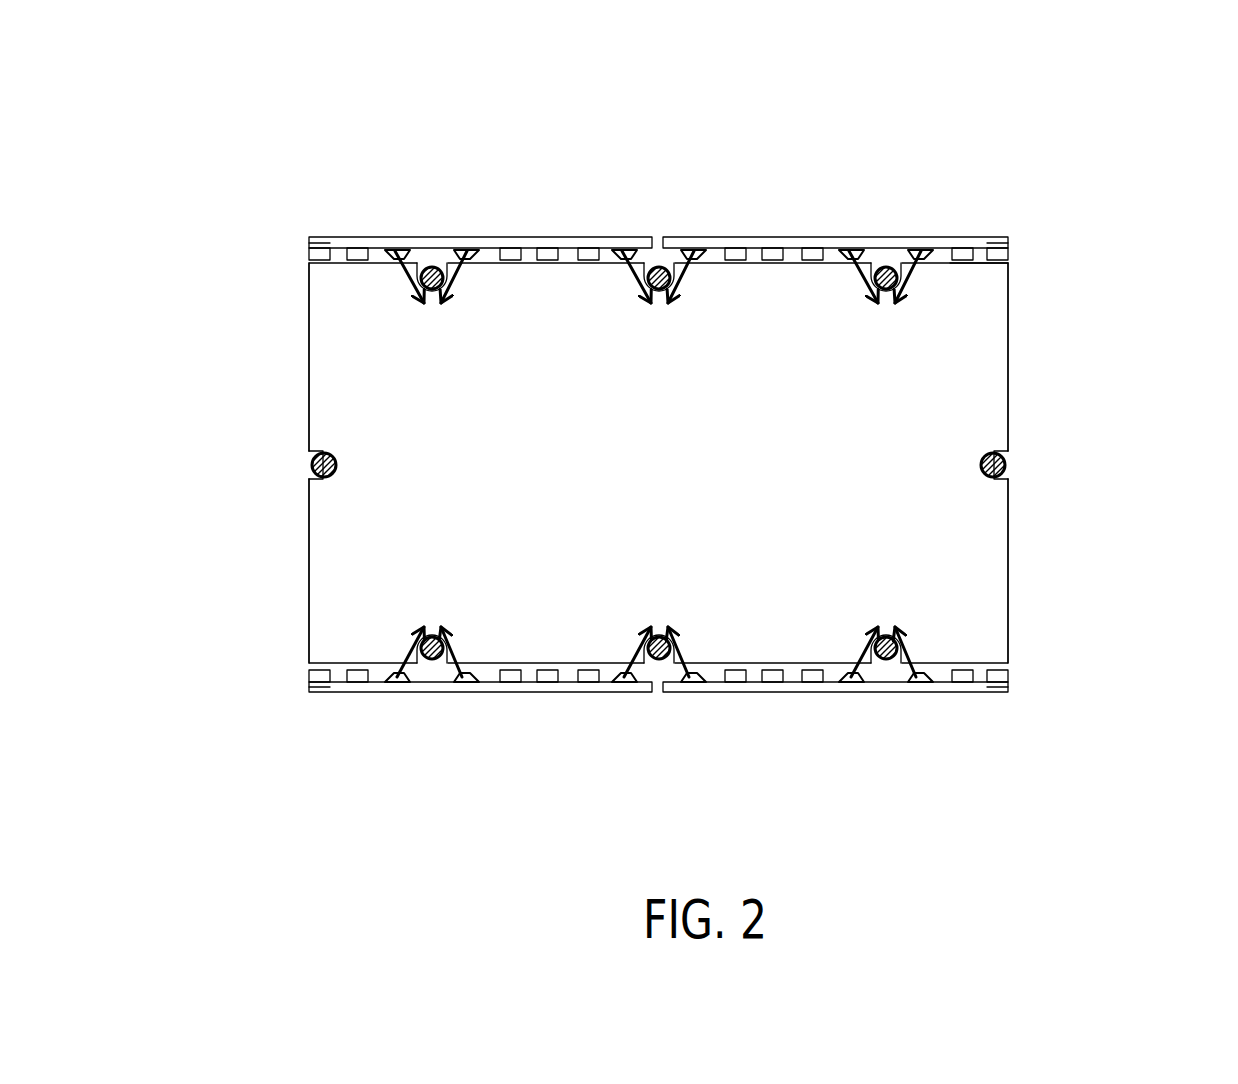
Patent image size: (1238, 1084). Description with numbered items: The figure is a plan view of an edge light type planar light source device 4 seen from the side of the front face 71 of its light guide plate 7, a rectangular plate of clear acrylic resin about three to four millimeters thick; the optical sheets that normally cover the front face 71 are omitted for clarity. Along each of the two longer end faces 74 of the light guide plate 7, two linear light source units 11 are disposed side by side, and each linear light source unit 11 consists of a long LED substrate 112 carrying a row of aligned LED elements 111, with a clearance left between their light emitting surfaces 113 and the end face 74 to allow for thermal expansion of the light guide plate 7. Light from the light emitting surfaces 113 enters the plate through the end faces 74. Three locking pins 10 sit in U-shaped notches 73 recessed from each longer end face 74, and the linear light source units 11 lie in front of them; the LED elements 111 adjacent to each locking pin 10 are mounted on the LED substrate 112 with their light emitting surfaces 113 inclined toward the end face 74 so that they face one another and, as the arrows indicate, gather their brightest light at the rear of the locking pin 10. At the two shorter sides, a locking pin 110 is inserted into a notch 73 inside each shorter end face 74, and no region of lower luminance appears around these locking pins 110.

The edge light type planar light source device 4 is at (1050, 566).
The light guide plate 7 is at (1012, 385).
The front face 71 is at (1009, 344).
The notch 73 is at (879, 798).
The end face 74 is at (247, 524).
The locking pin 10 is at (912, 745).
The linear light source unit 11 is at (770, 745).
The locking pin 110 is at (315, 470).
The LED element 111 is at (954, 798).
The LED substrate 112 is at (309, 243).
The light emitting surface 113 is at (393, 263).